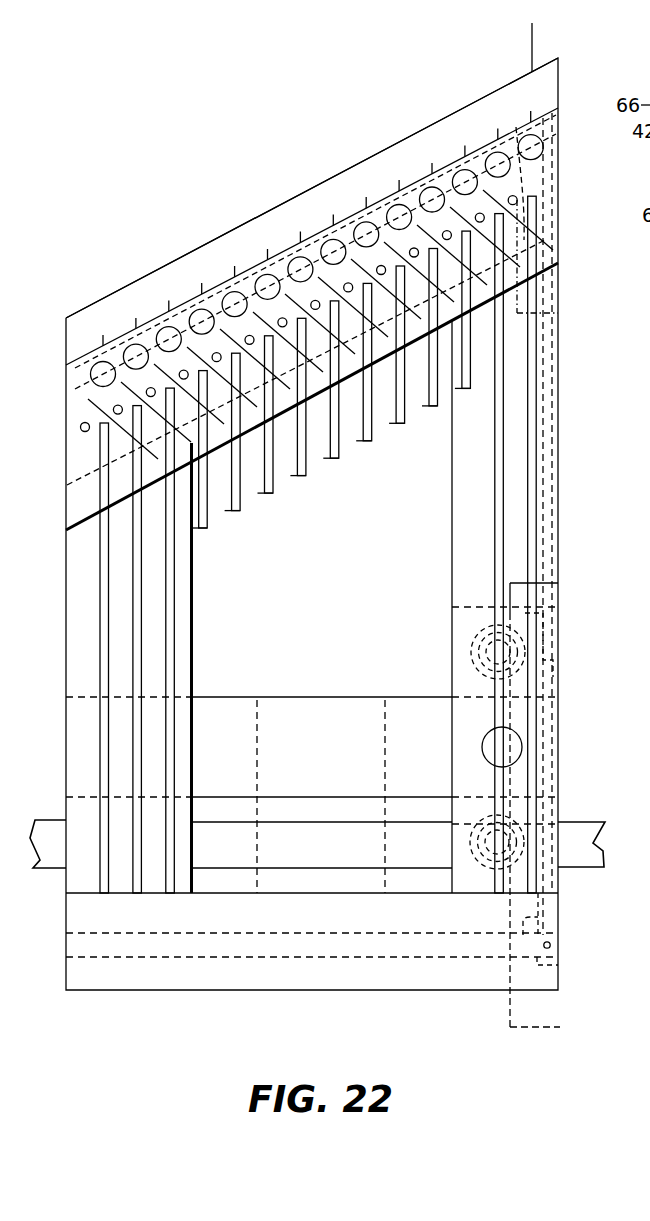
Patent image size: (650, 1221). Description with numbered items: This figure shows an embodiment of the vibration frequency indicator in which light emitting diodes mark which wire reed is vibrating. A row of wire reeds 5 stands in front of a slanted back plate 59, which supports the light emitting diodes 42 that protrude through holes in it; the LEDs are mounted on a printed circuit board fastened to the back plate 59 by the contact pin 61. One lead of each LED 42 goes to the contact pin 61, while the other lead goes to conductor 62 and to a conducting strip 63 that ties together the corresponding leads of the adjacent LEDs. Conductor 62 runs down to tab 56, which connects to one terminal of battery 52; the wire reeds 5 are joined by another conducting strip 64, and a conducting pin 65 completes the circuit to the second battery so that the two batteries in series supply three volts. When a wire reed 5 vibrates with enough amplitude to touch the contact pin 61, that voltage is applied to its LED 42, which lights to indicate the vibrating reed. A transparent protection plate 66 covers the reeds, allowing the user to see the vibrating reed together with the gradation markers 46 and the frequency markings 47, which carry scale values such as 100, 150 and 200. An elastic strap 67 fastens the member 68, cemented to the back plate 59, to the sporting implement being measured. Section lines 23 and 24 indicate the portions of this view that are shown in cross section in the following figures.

The wire reeds 5 is at (536, 431).
The section line 23- 23 is at (532, 23).
The section line 24- 24 is at (558, 583).
The light emitting diodes 42 is at (130, 348).
The gradation markers 46 is at (455, 166).
The frequency markings 47 is at (312, 192).
The battery 52 is at (558, 622).
The tab 56 is at (560, 675).
The back plate 59 is at (195, 601).
The contact pin 61 is at (520, 199).
The conductor 62 is at (562, 358).
The conducting strip 63 is at (516, 127).
The conducting strip 64 is at (538, 917).
The conducting pin 65 is at (550, 945).
The protection plate 66 is at (553, 177).
The elastic strap 67 is at (578, 845).
The member 68 is at (387, 808).
The graduation 100 is at (532, 104).
The graduation 150 is at (368, 190).
The graduation 200 is at (205, 275).